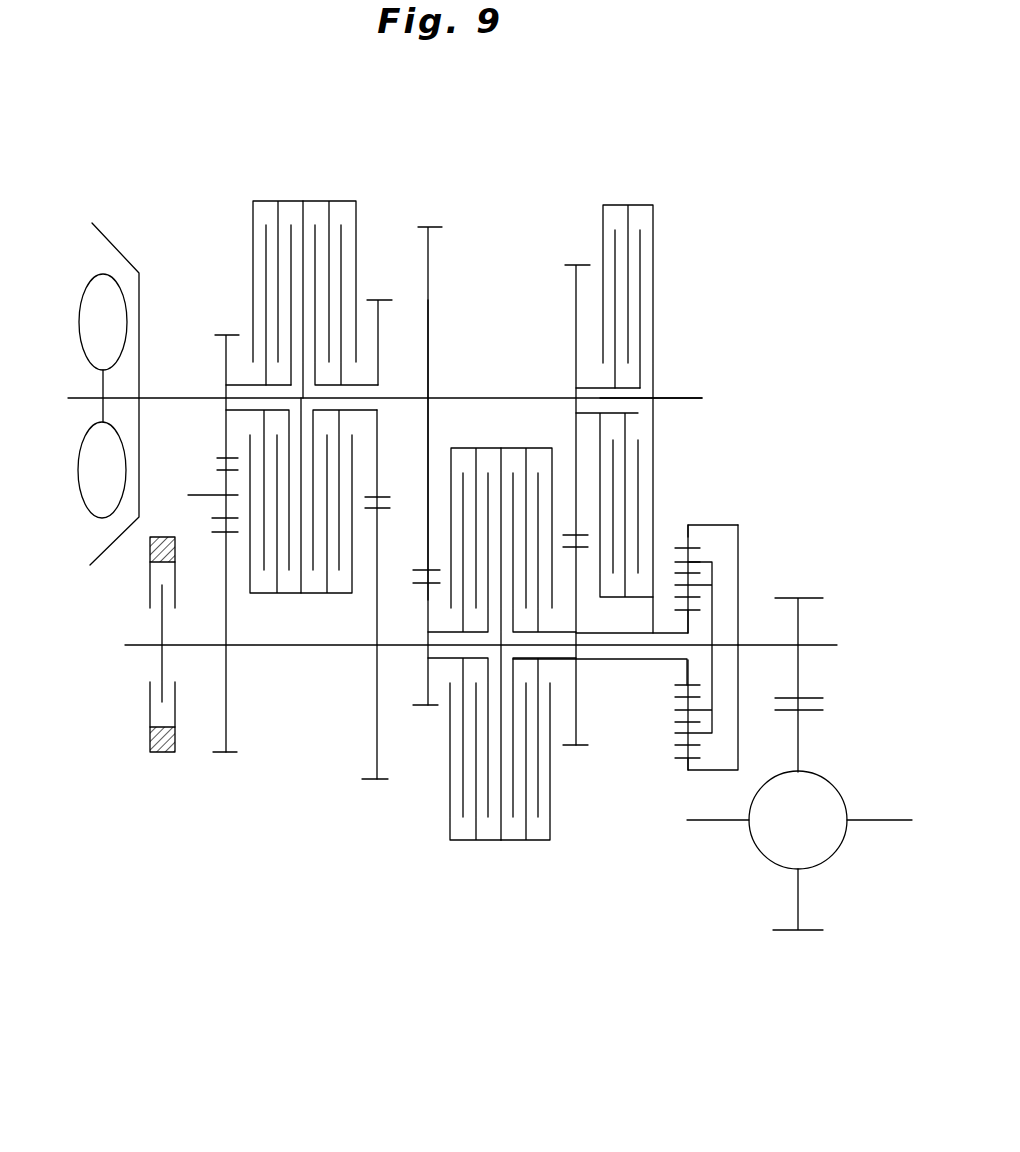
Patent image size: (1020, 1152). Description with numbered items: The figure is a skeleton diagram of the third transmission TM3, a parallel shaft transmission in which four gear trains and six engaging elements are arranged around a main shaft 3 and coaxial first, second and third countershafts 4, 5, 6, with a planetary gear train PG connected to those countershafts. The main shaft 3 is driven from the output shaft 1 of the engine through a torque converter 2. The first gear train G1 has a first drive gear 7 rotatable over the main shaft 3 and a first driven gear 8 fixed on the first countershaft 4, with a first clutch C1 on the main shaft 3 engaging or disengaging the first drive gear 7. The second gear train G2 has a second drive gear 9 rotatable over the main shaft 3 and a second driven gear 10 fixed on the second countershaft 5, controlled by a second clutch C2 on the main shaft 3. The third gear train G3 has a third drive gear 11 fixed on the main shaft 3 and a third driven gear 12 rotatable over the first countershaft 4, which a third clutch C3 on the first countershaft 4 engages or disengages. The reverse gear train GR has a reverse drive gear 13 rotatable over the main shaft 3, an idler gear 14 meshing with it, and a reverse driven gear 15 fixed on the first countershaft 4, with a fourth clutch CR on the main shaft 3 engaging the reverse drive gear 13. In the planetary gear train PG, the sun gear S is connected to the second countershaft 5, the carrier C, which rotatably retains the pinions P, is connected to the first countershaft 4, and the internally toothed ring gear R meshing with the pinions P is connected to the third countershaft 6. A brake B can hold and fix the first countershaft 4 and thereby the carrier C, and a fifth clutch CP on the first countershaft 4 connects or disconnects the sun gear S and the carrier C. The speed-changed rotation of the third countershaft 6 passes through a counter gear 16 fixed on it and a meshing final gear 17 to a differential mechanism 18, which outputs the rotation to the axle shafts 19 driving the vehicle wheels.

The output shaft 1 is at (68, 398).
The torque converter 2 is at (92, 252).
The main shaft 3 is at (688, 400).
The first countershaft 4 is at (125, 643).
The second countershaft 5 is at (625, 662).
The third countershaft 6 is at (832, 645).
The first drive gear 7 is at (392, 300).
The first driven gear 8 is at (372, 781).
The second drive gear 9 is at (570, 265).
The second driven gear 10 is at (582, 747).
The third drive gear 11 is at (443, 227).
The third driven gear 12 is at (423, 708).
The reverse drive gear 13 is at (220, 333).
The idler gear 14 is at (220, 470).
The reverse driven gear 15 is at (228, 755).
The counter gear 16 is at (820, 598).
The final gear 17 is at (810, 932).
The differential mechanism 18 is at (832, 774).
The axle shafts 19 is at (880, 822).
The brake B is at (160, 764).
The carrier C is at (714, 606).
The pinions P is at (700, 548).
The ring gear R is at (680, 537).
The sun gear S is at (676, 610).
The planetary gear train PG is at (672, 659).
The fourth clutch CR is at (278, 193).
The first clutch C1 is at (332, 193).
The second clutch C2 is at (628, 193).
The third clutch C3 is at (470, 852).
The fifth clutch CP is at (527, 852).
The first gear train G1 is at (380, 258).
The second gear train G2 is at (577, 238).
The third gear train G3 is at (428, 205).
The reverse gear train GR is at (226, 312).
The third transmission TM3 is at (725, 208).